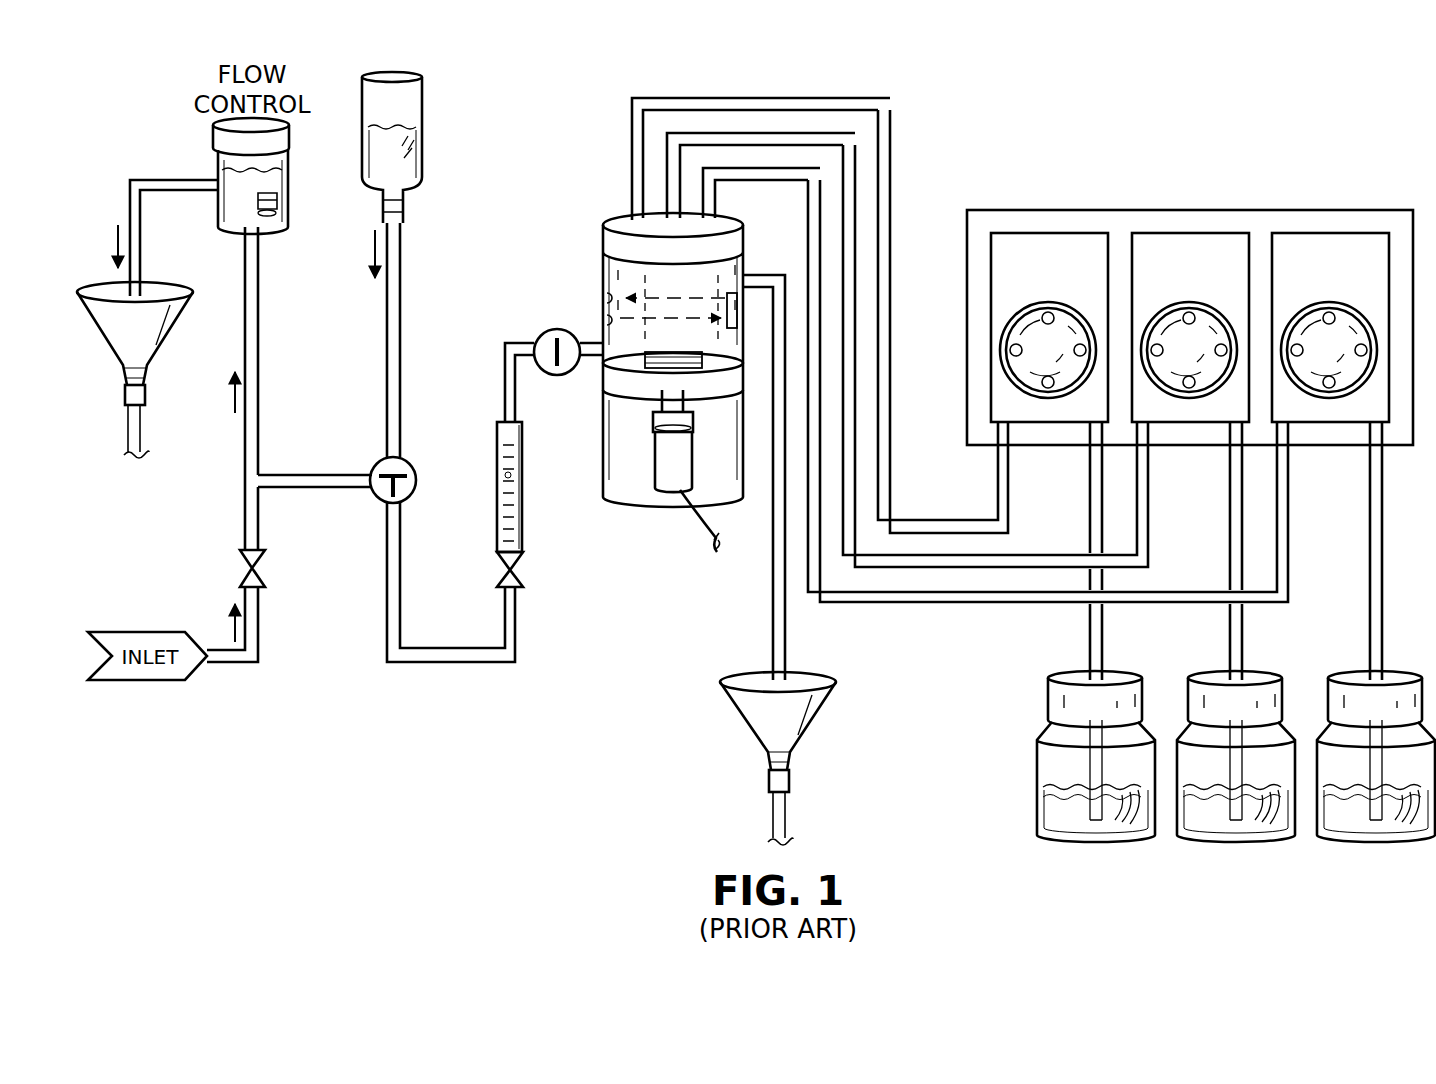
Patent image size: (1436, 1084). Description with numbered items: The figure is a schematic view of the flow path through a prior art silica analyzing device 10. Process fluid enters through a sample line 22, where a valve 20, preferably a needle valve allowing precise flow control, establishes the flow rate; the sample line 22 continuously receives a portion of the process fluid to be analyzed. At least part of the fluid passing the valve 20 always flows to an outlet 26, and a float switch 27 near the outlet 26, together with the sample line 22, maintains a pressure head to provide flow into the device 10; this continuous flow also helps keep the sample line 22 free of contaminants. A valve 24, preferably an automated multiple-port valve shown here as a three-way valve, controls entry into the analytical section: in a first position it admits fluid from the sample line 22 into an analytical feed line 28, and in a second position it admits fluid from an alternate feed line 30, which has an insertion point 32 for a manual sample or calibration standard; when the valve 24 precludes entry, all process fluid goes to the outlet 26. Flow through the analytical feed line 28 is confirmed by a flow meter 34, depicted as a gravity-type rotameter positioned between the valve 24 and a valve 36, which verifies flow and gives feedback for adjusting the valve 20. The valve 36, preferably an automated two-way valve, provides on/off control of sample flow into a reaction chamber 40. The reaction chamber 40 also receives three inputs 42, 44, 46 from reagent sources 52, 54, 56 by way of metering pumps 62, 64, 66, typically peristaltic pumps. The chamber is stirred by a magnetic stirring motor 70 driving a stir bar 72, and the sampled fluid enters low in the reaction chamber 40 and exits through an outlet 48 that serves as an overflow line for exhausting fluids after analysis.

The silica analyzing device 10 is at (1192, 114).
The valve 20 is at (240, 566).
The sample line 22 is at (245, 270).
The valve 24 is at (375, 500).
The outlet 26 is at (128, 203).
The float switch 27 is at (277, 200).
The analytical feed line 28 is at (385, 582).
The alternate feed line 30 is at (387, 336).
The insertion point 32 is at (422, 127).
The flow meter 34 is at (497, 489).
The valve 36 is at (536, 330).
The reaction chamber 40 is at (617, 212).
The input 42 is at (932, 520).
The input 44 is at (1048, 553).
The input 46 is at (1165, 590).
The outlet 48 is at (760, 273).
The reagent source 52 is at (1095, 840).
The reagent source 54 is at (1235, 840).
The reagent source 56 is at (1375, 840).
The metering pump 62 is at (1048, 303).
The metering pump 64 is at (1189, 303).
The metering pump 66 is at (1329, 303).
The magnetic stirring motor 70 is at (667, 480).
The stir bar 72 is at (692, 366).